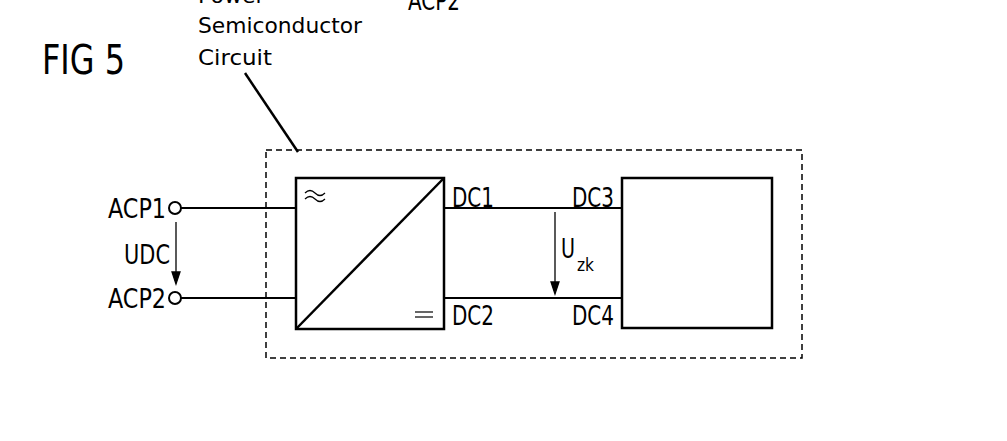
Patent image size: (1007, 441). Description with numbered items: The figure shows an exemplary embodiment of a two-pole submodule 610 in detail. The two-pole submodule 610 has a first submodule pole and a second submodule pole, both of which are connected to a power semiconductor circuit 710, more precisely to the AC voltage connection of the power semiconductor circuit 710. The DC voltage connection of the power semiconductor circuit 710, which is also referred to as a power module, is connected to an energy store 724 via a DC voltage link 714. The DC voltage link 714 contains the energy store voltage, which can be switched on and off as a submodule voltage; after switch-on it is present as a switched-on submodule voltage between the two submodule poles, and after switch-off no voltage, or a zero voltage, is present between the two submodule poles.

The two-pole submodule 610 is at (762, 150).
The power semiconductor circuit 710 is at (370, 178).
The DC voltage link 714 is at (538, 207).
The energy store 724 is at (690, 178).